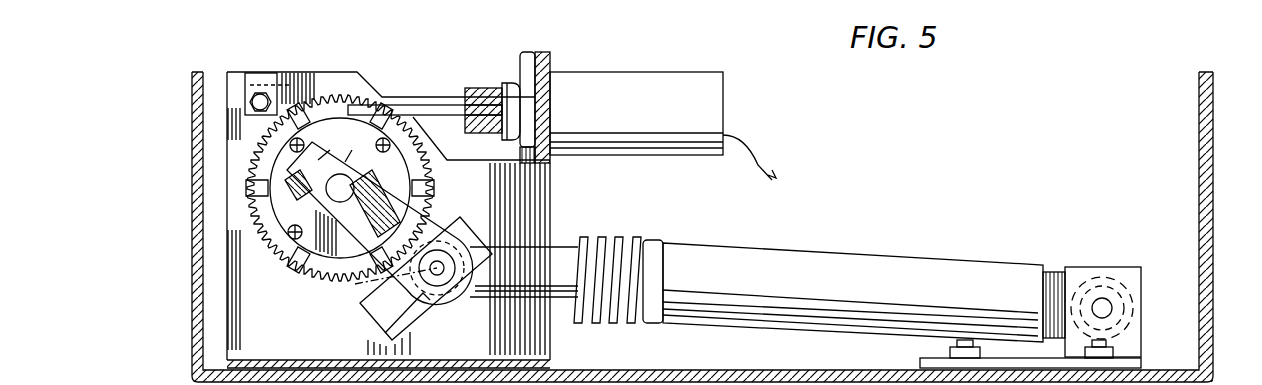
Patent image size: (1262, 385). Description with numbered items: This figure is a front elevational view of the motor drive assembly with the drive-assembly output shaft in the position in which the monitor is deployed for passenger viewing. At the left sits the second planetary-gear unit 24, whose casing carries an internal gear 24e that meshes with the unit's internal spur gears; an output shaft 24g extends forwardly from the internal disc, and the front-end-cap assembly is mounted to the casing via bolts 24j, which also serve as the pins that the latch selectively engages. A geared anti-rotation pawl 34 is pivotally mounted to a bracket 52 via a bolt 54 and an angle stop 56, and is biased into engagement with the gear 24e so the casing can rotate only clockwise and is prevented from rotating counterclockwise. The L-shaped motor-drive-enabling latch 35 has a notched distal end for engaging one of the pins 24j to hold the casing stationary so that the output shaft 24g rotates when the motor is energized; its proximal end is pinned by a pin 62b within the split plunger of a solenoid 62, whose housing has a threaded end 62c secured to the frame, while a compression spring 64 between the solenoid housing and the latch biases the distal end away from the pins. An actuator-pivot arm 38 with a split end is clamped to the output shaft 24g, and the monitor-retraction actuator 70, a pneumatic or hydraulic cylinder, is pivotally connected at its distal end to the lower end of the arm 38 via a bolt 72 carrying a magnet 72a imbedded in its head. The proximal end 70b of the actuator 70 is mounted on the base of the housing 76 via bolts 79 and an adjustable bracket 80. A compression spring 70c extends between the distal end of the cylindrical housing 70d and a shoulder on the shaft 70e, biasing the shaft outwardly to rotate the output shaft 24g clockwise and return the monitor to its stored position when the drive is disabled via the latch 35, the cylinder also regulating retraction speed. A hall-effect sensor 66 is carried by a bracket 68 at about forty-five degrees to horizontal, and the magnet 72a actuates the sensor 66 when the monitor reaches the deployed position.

The second planetary-gear unit 24 is at (298, 209).
The internal gear 24e is at (303, 268).
The output shaft 24g is at (345, 185).
The bolts 24j is at (300, 250).
The geared pawl 34 is at (290, 95).
The motor-drive-enabling latch 35 is at (423, 105).
The actuator-pivot arm 38 is at (420, 236).
The bracket 52 is at (337, 72).
The bolt 54 is at (250, 92).
The angle stop 56 is at (268, 73).
The solenoid 62 is at (636, 85).
The pin 62b is at (480, 88).
The threaded end 62c is at (525, 60).
The compression spring 64 is at (505, 83).
The hall-effect sensor 66 is at (460, 240).
The bracket 68 is at (430, 318).
The monitor-retraction actuator 70 is at (856, 254).
The proximal end 70b is at (1088, 275).
The compression spring 70c is at (572, 255).
The cylindrical housing 70d is at (858, 265).
The shaft 70e is at (648, 246).
The bolt 72 is at (456, 268).
The magnet 72a is at (386, 283).
The housing 76 is at (1213, 242).
The bolts 79 is at (968, 340).
The adjustable bracket 80 is at (1141, 340).